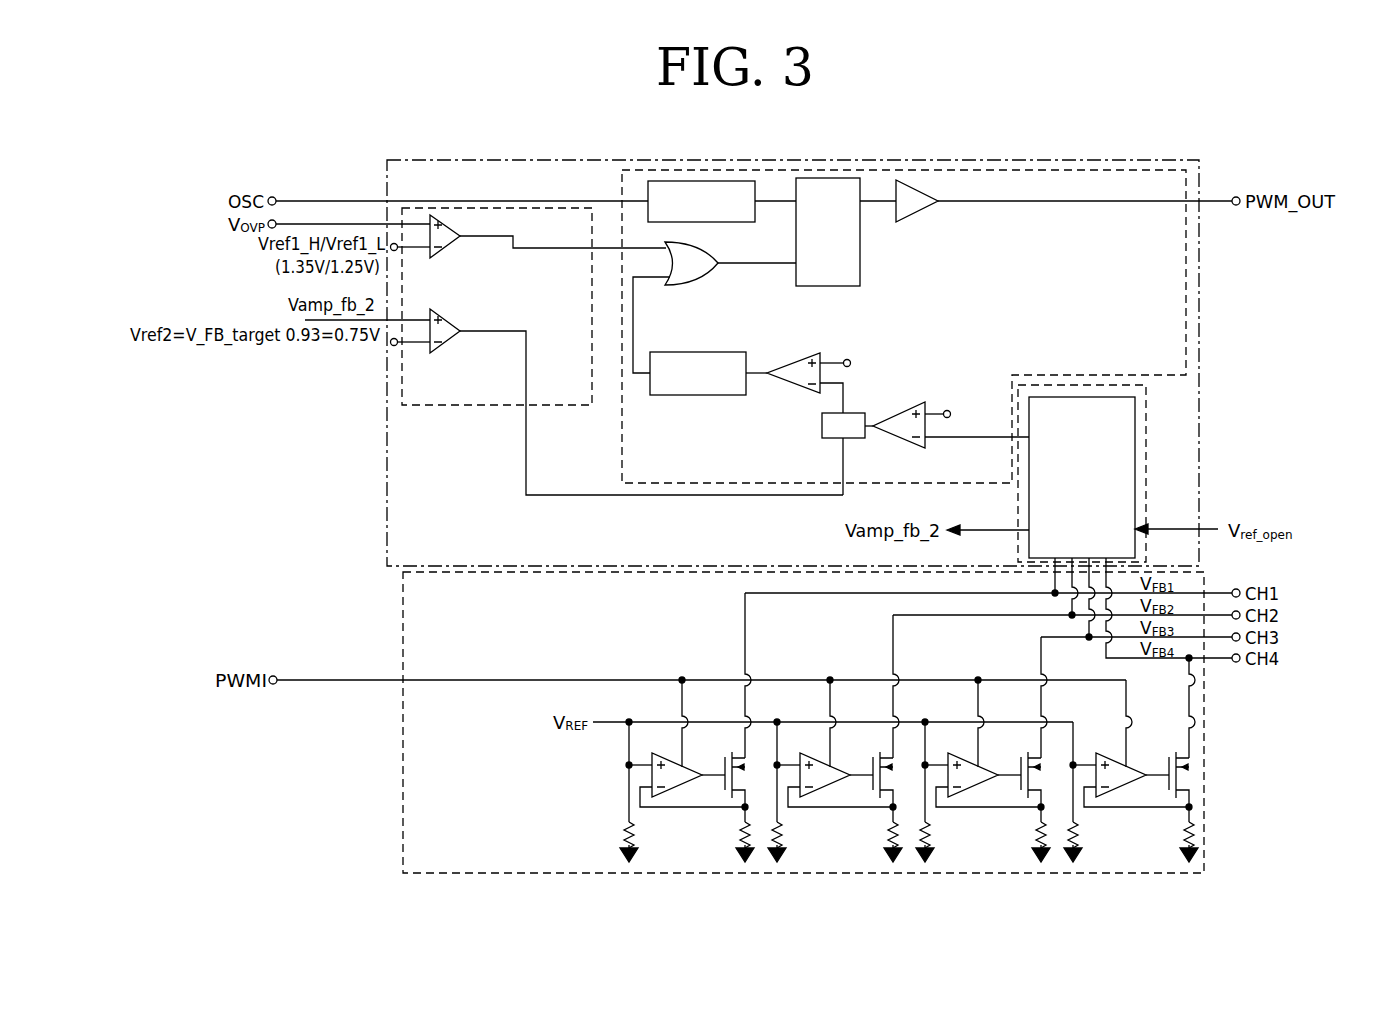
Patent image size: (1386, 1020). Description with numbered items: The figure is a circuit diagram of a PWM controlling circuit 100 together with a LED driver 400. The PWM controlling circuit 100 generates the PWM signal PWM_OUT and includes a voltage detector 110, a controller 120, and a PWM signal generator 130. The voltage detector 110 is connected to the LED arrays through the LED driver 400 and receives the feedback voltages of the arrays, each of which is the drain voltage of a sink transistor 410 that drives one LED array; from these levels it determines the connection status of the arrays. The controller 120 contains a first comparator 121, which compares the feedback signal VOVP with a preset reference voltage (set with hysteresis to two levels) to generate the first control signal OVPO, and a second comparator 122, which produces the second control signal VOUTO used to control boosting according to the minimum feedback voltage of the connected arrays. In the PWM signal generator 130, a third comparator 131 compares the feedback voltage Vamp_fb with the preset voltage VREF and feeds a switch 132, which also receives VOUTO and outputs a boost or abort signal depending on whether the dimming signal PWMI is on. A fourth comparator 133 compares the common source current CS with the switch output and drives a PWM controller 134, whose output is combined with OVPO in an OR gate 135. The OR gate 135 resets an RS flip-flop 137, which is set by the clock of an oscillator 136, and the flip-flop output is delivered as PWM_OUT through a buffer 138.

The PWM controlling circuit 100 is at (1199, 483).
The voltage detector 110 is at (1146, 494).
The controller 120 is at (402, 398).
The first comparator 121 is at (448, 216).
The second comparator 122 is at (460, 310).
The PWM signal generator 130 is at (1186, 303).
The third comparator 131 is at (888, 417).
The switch 132 is at (822, 426).
The fourth comparator 133 is at (788, 364).
The PWM controller 134 is at (710, 352).
The OR gate 135 is at (708, 245).
The oscillator 136 is at (720, 181).
The RS flip-flop 137 is at (822, 178).
The buffer 138 is at (898, 180).
The LED driver 400 is at (1204, 725).
The sink transistor 410 is at (726, 798).